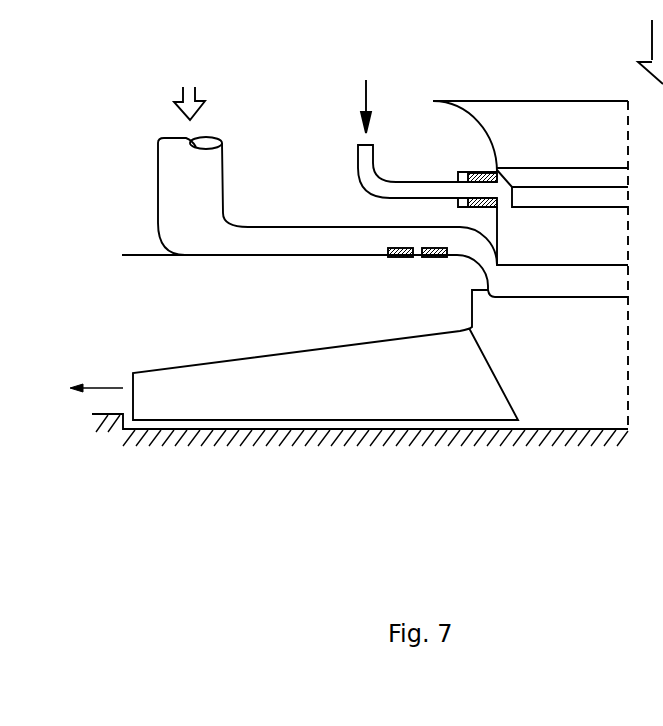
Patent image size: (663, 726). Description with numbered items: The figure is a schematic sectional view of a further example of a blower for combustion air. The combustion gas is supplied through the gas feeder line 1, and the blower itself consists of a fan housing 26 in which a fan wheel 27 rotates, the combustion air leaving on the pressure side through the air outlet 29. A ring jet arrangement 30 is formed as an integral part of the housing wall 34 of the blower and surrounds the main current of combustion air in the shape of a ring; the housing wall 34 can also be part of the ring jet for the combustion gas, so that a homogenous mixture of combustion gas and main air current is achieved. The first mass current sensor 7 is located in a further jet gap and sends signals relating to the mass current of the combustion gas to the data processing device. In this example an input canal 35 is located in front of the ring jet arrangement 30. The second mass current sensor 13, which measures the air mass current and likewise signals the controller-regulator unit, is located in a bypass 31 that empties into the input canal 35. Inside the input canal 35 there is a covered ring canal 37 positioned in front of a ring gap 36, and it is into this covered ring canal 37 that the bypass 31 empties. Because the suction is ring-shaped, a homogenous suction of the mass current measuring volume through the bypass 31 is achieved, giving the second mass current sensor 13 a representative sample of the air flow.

The gas feeder line 1 is at (160, 162).
The first mass current sensor 7 is at (417, 260).
The second mass current sensor 13 is at (456, 171).
The fan housing 26 is at (203, 442).
The fan wheel 27 is at (303, 367).
The air outlet 29 is at (112, 377).
The ring jet arrangement 30 is at (280, 203).
The bypass 31 is at (364, 168).
The housing wall 34 is at (128, 255).
The input canal 35 is at (530, 265).
The ring gap 36 is at (503, 203).
The covered ring canal 37 is at (608, 232).